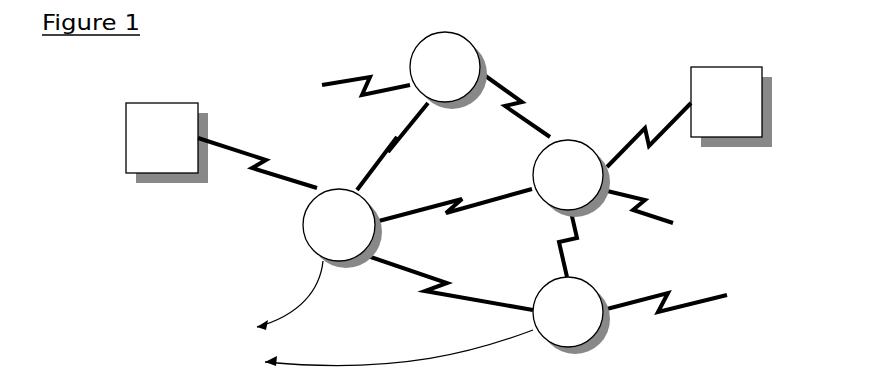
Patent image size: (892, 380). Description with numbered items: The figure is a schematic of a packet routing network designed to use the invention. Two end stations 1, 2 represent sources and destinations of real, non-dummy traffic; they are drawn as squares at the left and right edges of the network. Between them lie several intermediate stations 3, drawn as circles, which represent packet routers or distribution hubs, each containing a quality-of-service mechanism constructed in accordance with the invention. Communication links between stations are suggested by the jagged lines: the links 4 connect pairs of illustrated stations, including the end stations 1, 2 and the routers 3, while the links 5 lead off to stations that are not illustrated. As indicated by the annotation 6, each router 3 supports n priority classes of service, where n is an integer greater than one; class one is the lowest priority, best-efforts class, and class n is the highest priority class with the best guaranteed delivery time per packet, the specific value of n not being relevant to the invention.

The end station 1 is at (108, 138).
The end station 2 is at (707, 138).
The intermediate station 3 is at (408, 67).
The communication link 4 is at (530, 97).
The communication link 5 is at (333, 75).
The priority class annotation 6 is at (145, 303).